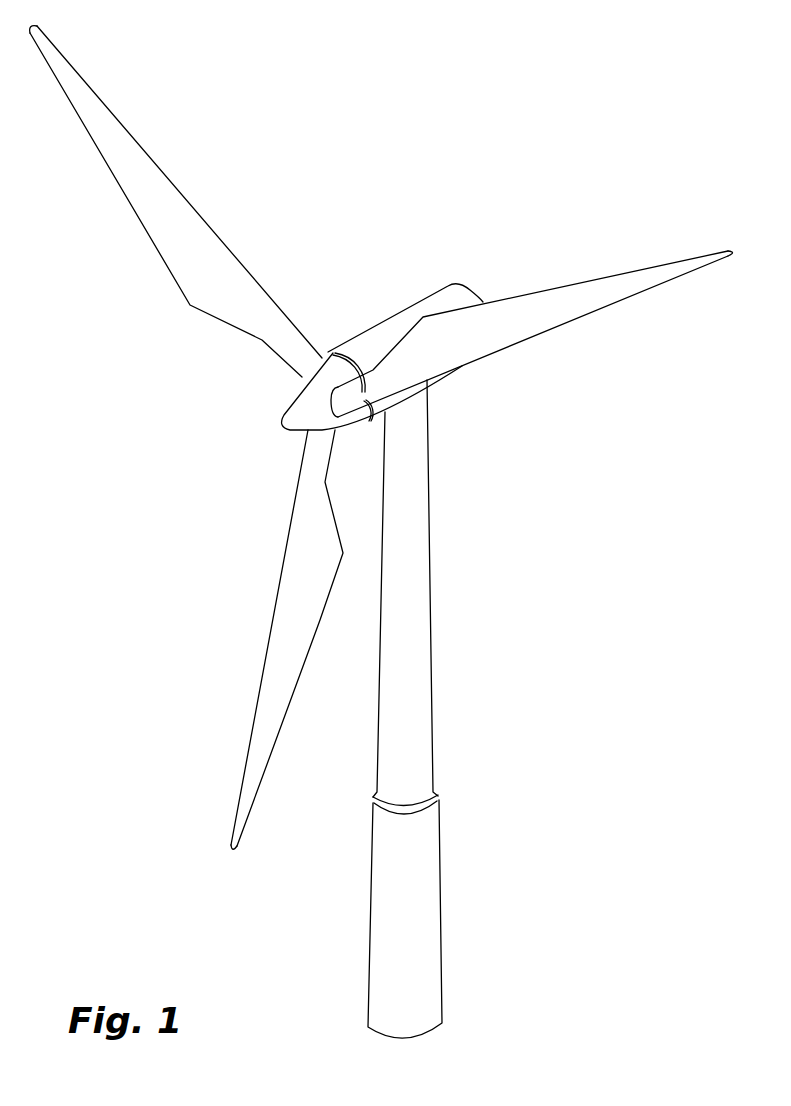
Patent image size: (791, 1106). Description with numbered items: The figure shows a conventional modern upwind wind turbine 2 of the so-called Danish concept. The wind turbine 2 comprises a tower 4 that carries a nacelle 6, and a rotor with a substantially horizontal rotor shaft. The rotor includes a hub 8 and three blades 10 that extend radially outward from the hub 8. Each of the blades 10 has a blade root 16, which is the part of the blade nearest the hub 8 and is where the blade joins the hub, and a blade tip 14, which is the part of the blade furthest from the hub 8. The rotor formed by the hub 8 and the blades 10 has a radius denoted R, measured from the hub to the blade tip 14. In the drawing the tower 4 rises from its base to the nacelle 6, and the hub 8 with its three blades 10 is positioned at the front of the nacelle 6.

The wind turbine 2 is at (518, 659).
The tower 4 is at (420, 593).
The nacelle 6 is at (373, 338).
The hub 8 is at (297, 410).
The blades 10 is at (202, 283).
The blade tip 14 is at (70, 77).
The blade root 16 is at (303, 372).